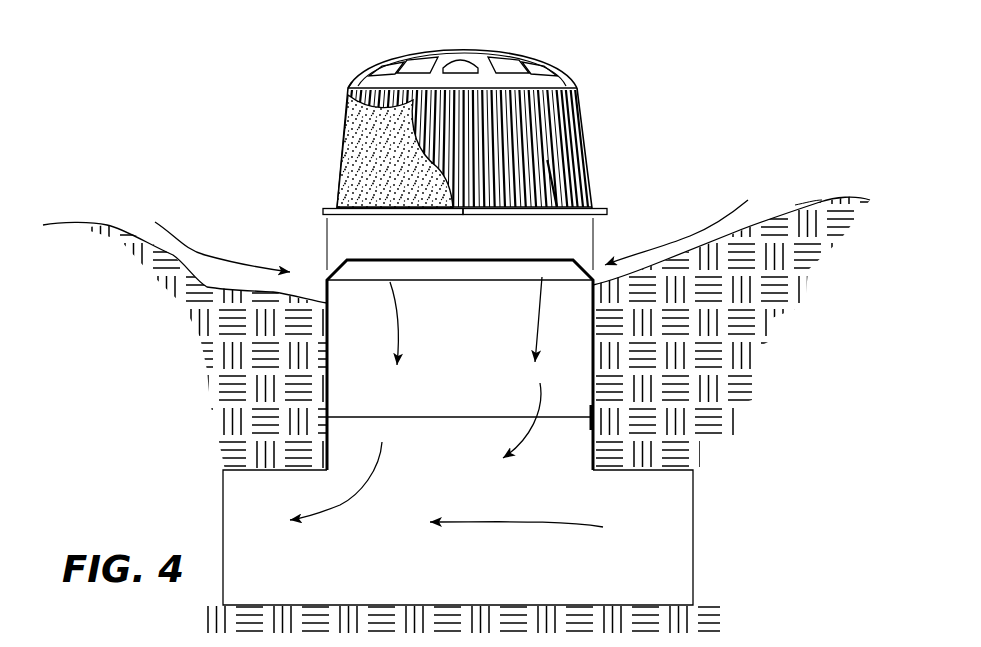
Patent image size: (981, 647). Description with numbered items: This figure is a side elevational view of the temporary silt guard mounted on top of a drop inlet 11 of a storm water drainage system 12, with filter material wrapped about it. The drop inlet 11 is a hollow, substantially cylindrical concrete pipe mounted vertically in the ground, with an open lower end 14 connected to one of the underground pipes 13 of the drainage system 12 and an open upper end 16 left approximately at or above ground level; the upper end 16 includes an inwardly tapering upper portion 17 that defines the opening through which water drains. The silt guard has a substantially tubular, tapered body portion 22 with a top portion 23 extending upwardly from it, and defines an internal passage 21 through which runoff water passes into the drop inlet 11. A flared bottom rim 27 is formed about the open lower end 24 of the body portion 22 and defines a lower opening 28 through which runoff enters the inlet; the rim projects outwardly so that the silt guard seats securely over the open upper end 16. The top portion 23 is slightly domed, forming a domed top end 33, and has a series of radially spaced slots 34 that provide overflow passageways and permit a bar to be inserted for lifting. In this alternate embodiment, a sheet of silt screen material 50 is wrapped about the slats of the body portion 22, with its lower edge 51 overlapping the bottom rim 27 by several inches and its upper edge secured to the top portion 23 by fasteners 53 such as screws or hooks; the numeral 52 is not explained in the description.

The drop inlet 11 is at (590, 362).
The storm water drainage system 12 is at (599, 417).
The underground pipes 13 is at (665, 537).
The open lower end 14 is at (483, 420).
The open upper end 16 is at (423, 283).
The inwardly tapering upper portion 17 is at (366, 263).
The internal passage 21 is at (565, 150).
The body portion 22 is at (525, 123).
The top portion 23 is at (468, 135).
The open lower end 24 is at (478, 203).
The bottom rim 27 is at (595, 208).
The lower opening 28 is at (547, 188).
The domed top end 33 is at (462, 50).
The slots 34 is at (514, 67).
The silt screen material 50 is at (350, 165).
The lower edge 51 is at (325, 216).
The dome rim corner 52 is at (350, 86).
The fasteners 53 is at (512, 83).